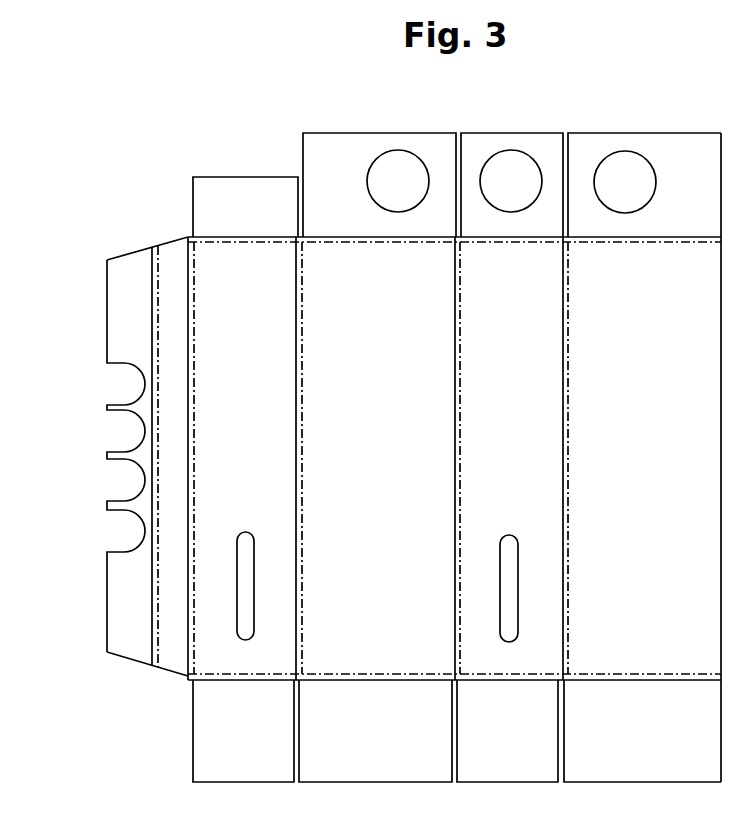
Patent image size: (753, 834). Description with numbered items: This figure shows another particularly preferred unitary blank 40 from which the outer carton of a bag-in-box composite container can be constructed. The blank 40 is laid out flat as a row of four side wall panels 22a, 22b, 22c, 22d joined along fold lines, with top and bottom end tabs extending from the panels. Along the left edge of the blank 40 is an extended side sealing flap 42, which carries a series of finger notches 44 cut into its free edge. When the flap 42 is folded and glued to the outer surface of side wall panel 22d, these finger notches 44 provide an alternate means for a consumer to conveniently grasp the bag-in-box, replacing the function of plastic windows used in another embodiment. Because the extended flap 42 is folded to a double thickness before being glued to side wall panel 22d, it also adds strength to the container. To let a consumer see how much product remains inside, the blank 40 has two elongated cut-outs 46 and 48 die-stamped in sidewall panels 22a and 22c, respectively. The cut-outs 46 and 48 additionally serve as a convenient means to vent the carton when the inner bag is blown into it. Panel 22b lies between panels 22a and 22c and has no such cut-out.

The blank 40 is at (640, 99).
The sidewall panel 22a is at (262, 368).
The side wall panel 22b is at (390, 368).
The sidewall panel 22c is at (520, 368).
The side wall panel 22d is at (652, 368).
The extended side sealing flap 42 is at (107, 456).
The finger notches 44 is at (117, 532).
The elongated cut-out 46 is at (247, 545).
The elongated cut-out 48 is at (512, 545).